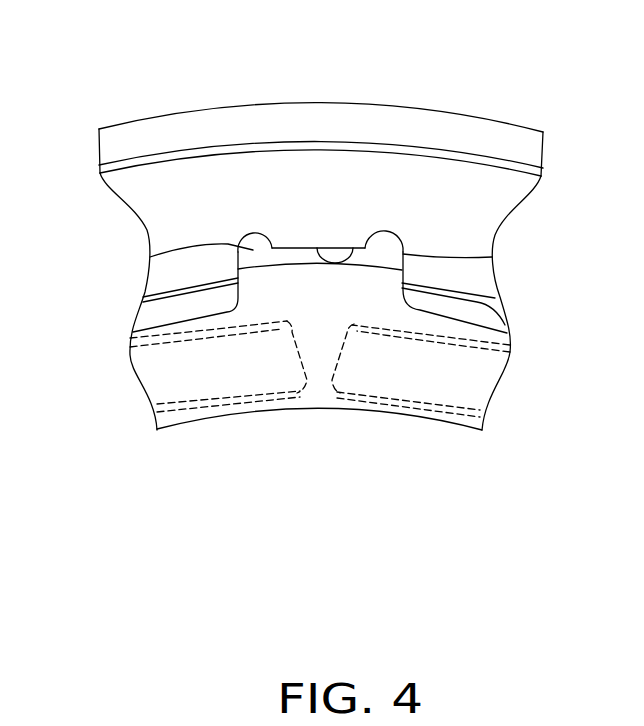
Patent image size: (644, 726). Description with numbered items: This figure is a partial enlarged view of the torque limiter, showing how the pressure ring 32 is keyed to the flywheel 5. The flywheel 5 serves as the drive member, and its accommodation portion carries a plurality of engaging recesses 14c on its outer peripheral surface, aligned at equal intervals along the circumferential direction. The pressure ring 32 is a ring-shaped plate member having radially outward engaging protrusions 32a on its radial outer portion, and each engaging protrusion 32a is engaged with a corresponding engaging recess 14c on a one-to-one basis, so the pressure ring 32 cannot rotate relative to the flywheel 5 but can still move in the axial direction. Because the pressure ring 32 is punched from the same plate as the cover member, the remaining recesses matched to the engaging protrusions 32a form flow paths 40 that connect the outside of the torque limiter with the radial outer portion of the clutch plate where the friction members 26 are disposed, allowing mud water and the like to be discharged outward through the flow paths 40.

The flywheel 5 is at (495, 188).
The engaging recesses 14c is at (354, 247).
The friction members 26 is at (217, 388).
The pressure ring 32 is at (318, 395).
The engaging protrusions 32a is at (372, 278).
The flow paths 40 is at (150, 257).